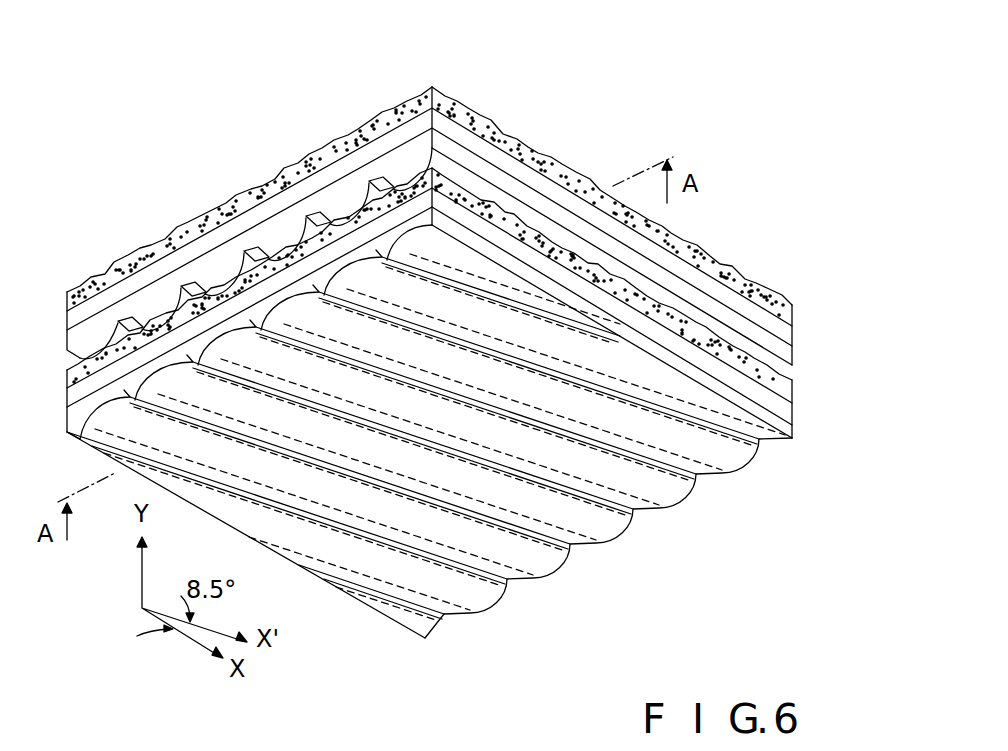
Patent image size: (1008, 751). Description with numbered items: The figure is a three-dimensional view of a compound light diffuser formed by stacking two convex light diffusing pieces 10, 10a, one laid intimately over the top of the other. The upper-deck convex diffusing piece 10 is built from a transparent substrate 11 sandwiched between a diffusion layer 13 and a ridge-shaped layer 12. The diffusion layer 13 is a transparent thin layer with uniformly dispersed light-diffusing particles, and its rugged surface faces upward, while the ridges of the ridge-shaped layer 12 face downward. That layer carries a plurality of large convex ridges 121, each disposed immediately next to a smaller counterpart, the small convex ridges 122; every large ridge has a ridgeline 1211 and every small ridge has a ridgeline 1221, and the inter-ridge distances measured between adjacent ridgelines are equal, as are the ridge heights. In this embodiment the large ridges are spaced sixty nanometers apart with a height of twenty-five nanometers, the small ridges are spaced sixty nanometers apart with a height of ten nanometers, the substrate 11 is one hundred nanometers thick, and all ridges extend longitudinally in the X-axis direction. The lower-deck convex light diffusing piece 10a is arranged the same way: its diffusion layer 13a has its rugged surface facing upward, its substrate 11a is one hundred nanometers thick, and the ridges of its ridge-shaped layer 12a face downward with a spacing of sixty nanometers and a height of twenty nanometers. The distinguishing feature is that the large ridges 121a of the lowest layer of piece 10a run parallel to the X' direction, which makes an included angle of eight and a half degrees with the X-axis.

The convex diffusing piece 10 is at (368, 104).
The convex light diffusing piece 10a is at (380, 631).
The substrate 11 is at (796, 327).
The substrate 11a is at (796, 411).
The ridge-shaped layer 12 is at (796, 348).
The ridge-shaped layer 12a is at (796, 434).
The diffusion layer 13 is at (796, 305).
The diffusion layer 13a is at (796, 386).
The large convex ridges 121 is at (135, 290).
The large ridges 121a is at (478, 592).
The ridgeline 1211 is at (168, 312).
The small convex ridges 122 is at (258, 260).
The ridgeline 1221 is at (263, 250).